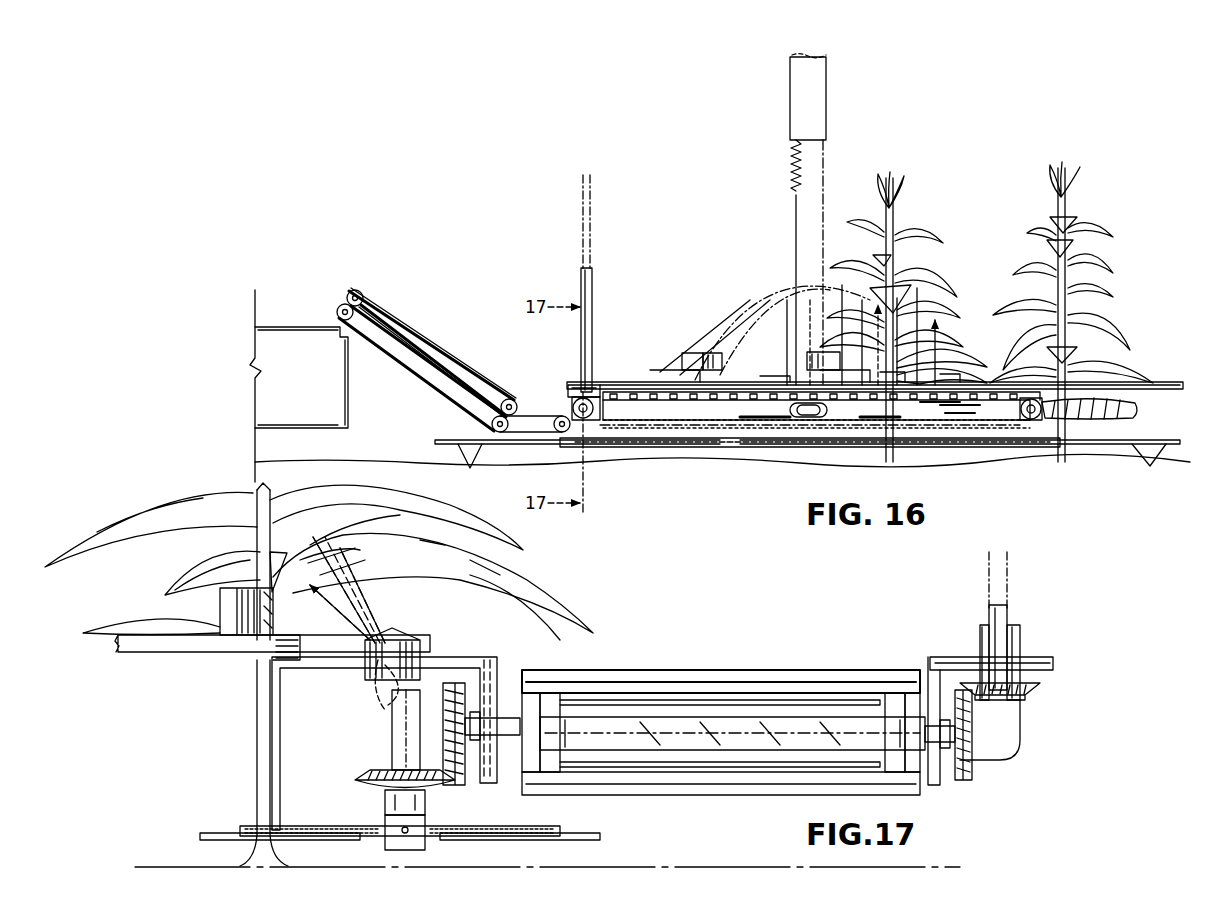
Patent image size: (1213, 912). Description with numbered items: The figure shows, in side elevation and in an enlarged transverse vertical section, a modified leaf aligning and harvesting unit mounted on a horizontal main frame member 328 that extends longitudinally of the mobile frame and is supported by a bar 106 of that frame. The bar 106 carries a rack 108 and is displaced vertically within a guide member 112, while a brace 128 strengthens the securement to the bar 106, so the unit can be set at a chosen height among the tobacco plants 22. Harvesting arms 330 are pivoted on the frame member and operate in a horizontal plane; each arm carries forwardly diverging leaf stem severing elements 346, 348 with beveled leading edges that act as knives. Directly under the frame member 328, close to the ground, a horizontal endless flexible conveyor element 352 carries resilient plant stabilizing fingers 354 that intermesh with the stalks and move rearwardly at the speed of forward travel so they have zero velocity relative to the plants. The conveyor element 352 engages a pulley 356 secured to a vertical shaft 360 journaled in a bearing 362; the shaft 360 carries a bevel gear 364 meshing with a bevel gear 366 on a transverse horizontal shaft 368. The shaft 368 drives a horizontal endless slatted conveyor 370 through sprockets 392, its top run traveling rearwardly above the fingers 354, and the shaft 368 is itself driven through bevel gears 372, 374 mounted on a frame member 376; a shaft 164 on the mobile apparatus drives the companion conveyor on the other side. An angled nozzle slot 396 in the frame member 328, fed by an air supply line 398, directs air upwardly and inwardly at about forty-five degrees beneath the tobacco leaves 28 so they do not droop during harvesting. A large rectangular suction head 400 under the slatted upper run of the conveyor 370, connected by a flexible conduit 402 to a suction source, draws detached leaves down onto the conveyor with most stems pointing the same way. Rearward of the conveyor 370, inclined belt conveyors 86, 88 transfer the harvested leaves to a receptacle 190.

In FIG. 16, the tobacco plants 22 is at (1045, 226).
In FIG. 17, the tobacco plants 22 is at (262, 490).
In FIG. 17, the tobacco leaves 28 is at (527, 587).
In FIG. 16, the inclined belt conveyor 86 is at (426, 378).
In FIG. 16, the inclined belt conveyor 88 is at (416, 330).
In FIG. 16, the bar 106 is at (803, 211).
In FIG. 16, the rack 108 is at (791, 165).
In FIG. 16, the guide member 112 is at (822, 83).
In FIG. 16, the brace 128 is at (745, 335).
In FIG. 16, the shaft 164 is at (592, 290).
In FIG. 17, the shaft 164 is at (1008, 612).
In FIG. 16, the receptacle 190 is at (303, 323).
In FIG. 17, the main frame member 328 is at (470, 656).
In FIG. 16, the harvesting arm 330 is at (804, 372).
In FIG. 17, the harvesting arm 330 is at (206, 650).
In FIG. 16, the leaf stem severing element 346 is at (712, 352).
In FIG. 16, the leaf stem severing element 348 is at (692, 352).
In FIG. 17, the endless flexible conveyor element 352 is at (430, 832).
In FIG. 16, the plant stabilizing fingers 354 is at (807, 467).
In FIG. 17, the plant stabilizing fingers 354 is at (292, 830).
In FIG. 17, the pulley 356 is at (360, 830).
In FIG. 17, the vertical shaft 360 is at (392, 807).
In FIG. 17, the bearing 362 is at (392, 730).
In FIG. 17, the bevel gear 364 is at (375, 776).
In FIG. 17, the bevel gear 366 is at (463, 770).
In FIG. 17, the transverse horizontal shaft 368 is at (518, 700).
In FIG. 16, the endless slatted conveyor 370 is at (700, 427).
In FIG. 17, the endless slatted conveyor 370 is at (596, 685).
In FIG. 16, the bevel gear 372 is at (572, 410).
In FIG. 17, the bevel gear 372 is at (972, 775).
In FIG. 16, the bevel gear 374 is at (570, 396).
In FIG. 17, the bevel gear 374 is at (1032, 690).
In FIG. 17, the frame member 376 is at (1045, 665).
In FIG. 17, the sprocket 392 is at (550, 700).
In FIG. 17, the nozzle slot 396 is at (385, 645).
In FIG. 16, the air supply line 398 is at (1138, 410).
In FIG. 17, the air supply line 398 is at (380, 710).
In FIG. 16, the suction head 400 is at (767, 417).
In FIG. 17, the suction head 400 is at (738, 760).
In FIG. 17, the flexible conduit 402 is at (1016, 640).